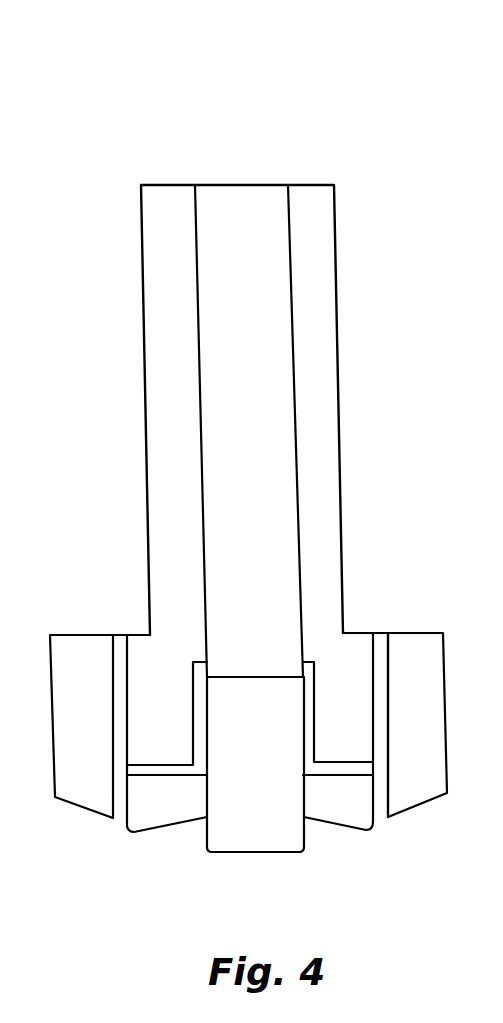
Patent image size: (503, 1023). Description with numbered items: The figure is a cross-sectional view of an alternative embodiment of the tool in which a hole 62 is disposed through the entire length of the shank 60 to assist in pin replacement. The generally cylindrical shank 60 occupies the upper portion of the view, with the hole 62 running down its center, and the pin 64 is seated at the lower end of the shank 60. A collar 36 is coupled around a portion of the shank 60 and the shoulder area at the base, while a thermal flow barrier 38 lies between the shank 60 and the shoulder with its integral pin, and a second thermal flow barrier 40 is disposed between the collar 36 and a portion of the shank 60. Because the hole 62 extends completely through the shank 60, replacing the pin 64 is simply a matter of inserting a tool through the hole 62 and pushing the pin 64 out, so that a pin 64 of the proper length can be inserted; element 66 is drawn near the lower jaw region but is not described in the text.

The collar 36 is at (423, 662).
The thermal flow barrier 38 is at (140, 768).
The thermal flow barrier 40 is at (378, 647).
The shank 60 is at (327, 427).
The hole 62 is at (256, 212).
The pin 64 is at (262, 838).
The jaw gripping edge 66 is at (343, 815).